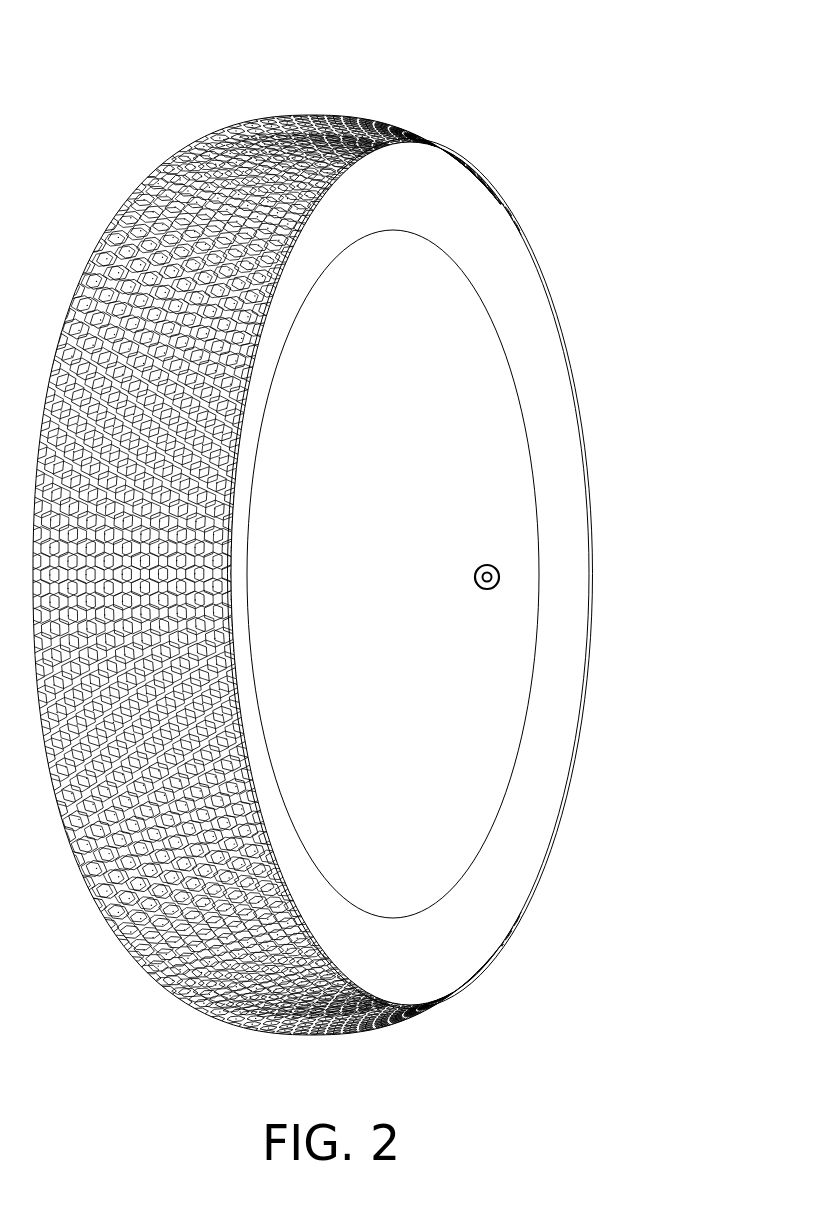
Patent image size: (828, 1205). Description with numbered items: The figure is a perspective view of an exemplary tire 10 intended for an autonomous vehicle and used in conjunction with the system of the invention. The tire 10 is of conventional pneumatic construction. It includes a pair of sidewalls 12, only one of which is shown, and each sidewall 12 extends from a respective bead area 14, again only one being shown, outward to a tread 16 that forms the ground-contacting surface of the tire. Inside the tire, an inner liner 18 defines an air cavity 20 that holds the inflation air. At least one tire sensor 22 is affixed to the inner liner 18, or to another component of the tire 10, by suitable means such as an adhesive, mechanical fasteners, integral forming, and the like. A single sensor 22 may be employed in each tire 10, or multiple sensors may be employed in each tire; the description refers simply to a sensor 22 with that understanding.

The tire 10 is at (355, 112).
The sidewall 12 is at (478, 217).
The bead area 14 is at (485, 306).
The tread 16 is at (180, 142).
The inner liner 18 is at (522, 420).
The air cavity 20 is at (479, 519).
The tire sensor 22 is at (499, 576).